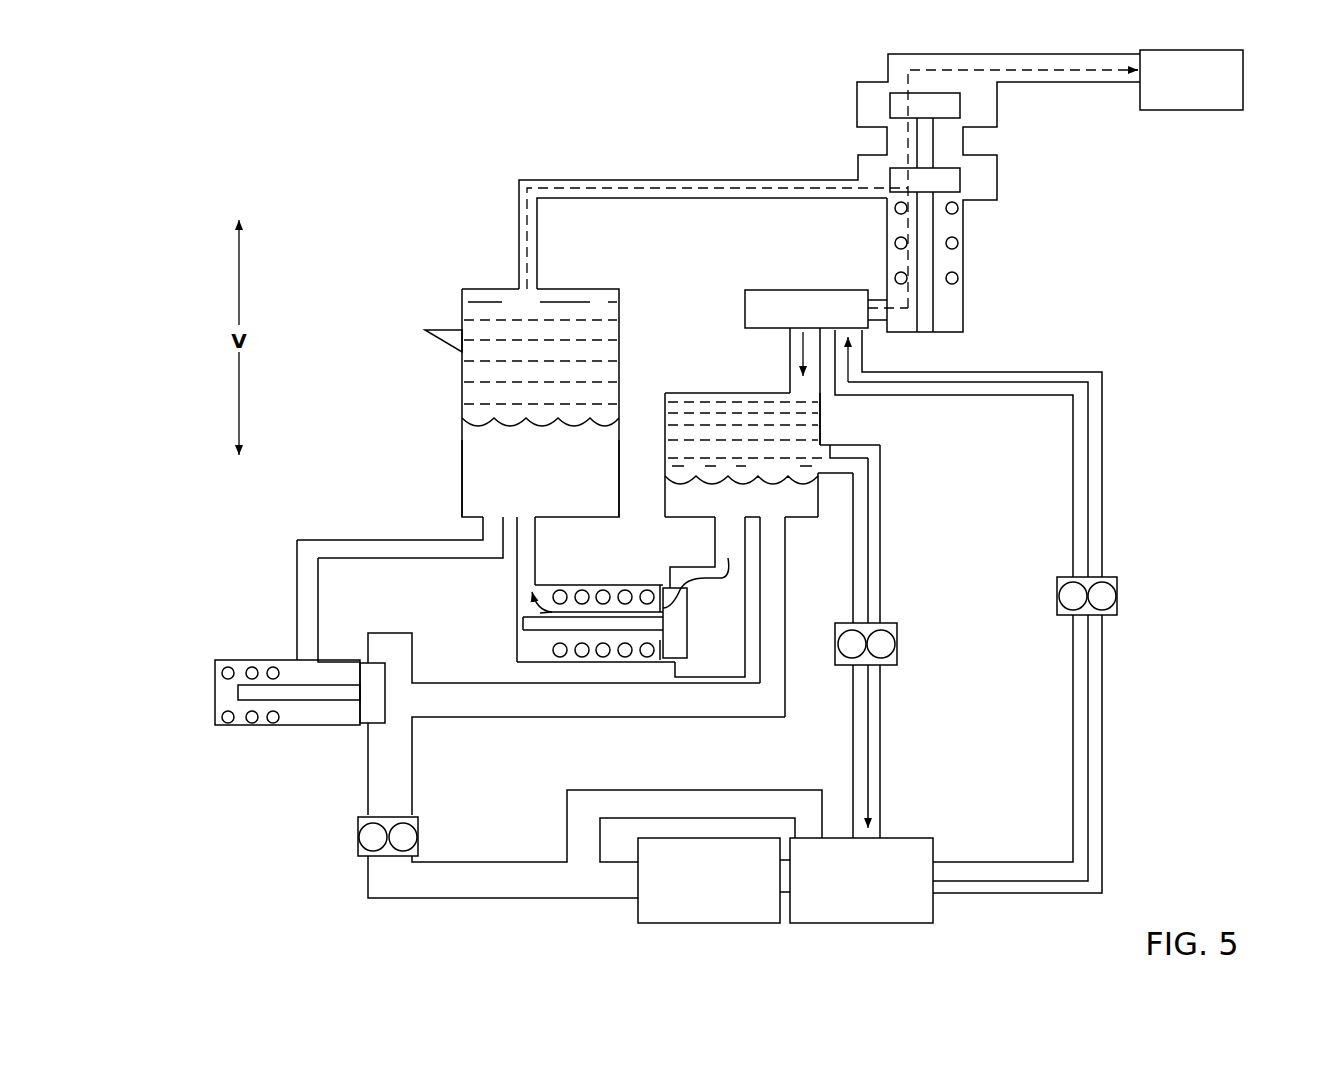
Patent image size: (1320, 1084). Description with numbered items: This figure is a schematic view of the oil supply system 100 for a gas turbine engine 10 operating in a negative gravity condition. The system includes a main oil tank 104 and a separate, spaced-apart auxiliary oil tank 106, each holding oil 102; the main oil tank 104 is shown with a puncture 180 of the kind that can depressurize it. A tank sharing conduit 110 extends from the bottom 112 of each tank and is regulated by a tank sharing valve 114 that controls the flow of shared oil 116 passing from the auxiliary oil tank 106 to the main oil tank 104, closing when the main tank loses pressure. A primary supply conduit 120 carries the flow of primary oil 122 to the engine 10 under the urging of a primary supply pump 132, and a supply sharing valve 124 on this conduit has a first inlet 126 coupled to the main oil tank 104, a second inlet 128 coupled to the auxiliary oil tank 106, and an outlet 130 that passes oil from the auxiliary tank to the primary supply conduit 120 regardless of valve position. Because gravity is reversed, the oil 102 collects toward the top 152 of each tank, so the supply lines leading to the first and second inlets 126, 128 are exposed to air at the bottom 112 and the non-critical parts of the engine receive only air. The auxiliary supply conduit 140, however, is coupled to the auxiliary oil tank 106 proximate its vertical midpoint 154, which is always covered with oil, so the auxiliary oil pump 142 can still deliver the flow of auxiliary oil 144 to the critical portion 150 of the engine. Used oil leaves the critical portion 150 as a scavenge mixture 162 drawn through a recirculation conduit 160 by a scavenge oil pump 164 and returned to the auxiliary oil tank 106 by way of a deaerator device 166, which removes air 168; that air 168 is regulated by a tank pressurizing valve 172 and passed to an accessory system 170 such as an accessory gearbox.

The gas turbine engine 10 is at (714, 880).
The oil supply system 100 is at (522, 78).
The oil 102 is at (466, 477).
The main oil tank 104 is at (455, 418).
The auxiliary oil tank 106 is at (660, 451).
The tank sharing conduit 110 is at (572, 583).
The bottom 112 is at (510, 530).
The tank sharing valve 114 is at (635, 627).
The flow of shared oil 116 is at (540, 613).
The primary supply conduit 120 is at (420, 898).
The flow of primary oil 122 is at (520, 880).
The supply sharing valve 124 is at (262, 693).
The first inlet 126 is at (292, 656).
The second inlet 128 is at (416, 680).
The outlet 130 is at (386, 736).
The primary supply pump 132 is at (357, 835).
The auxiliary supply conduit 140 is at (880, 548).
The auxiliary oil pump 142 is at (897, 640).
The flow of auxiliary oil 144 is at (868, 508).
The critical portion 150 is at (861, 880).
The top 152 is at (596, 284).
The vertical midpoint 154 is at (777, 444).
The recirculation conduit 160 is at (1102, 512).
The scavenge mixture 162 is at (1088, 467).
The scavenge oil pump 164 is at (1118, 585).
The deaerator device 166 is at (816, 309).
The air 168 is at (758, 180).
The accessory system 170 is at (1191, 80).
The tank pressurizing valve 172 is at (927, 252).
The puncture 180 is at (448, 307).